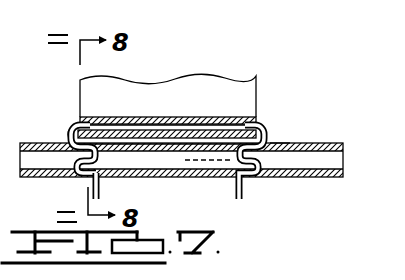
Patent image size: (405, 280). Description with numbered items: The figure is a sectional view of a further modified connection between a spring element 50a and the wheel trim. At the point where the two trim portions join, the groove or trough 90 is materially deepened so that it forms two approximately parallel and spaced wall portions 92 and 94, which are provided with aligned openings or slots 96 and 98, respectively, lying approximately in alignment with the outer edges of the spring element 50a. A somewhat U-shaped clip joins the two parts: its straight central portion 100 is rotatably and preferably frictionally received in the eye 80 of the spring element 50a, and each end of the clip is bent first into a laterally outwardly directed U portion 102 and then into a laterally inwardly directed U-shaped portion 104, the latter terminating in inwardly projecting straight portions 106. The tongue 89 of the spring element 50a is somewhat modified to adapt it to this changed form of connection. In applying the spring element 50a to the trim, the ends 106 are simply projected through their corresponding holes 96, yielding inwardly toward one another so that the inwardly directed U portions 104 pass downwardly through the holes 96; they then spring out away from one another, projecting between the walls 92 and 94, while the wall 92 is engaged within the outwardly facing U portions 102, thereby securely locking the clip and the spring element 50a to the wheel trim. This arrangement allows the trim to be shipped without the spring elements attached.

The spring element 50a is at (256, 76).
The eye 80 is at (119, 110).
The straight central portion 100 is at (150, 128).
The tongue 89 is at (279, 147).
The wall portion 92 is at (294, 146).
The groove or trough 90 is at (336, 160).
The wall portion 94 is at (290, 178).
The laterally outwardly directed U portion 102 is at (95, 150).
The openings or slots 96 is at (140, 163).
The openings or slots 98 is at (132, 173).
The laterally inwardly directed U-shaped portion 104 is at (73, 172).
The inwardly projecting straight portions 106 is at (101, 191).